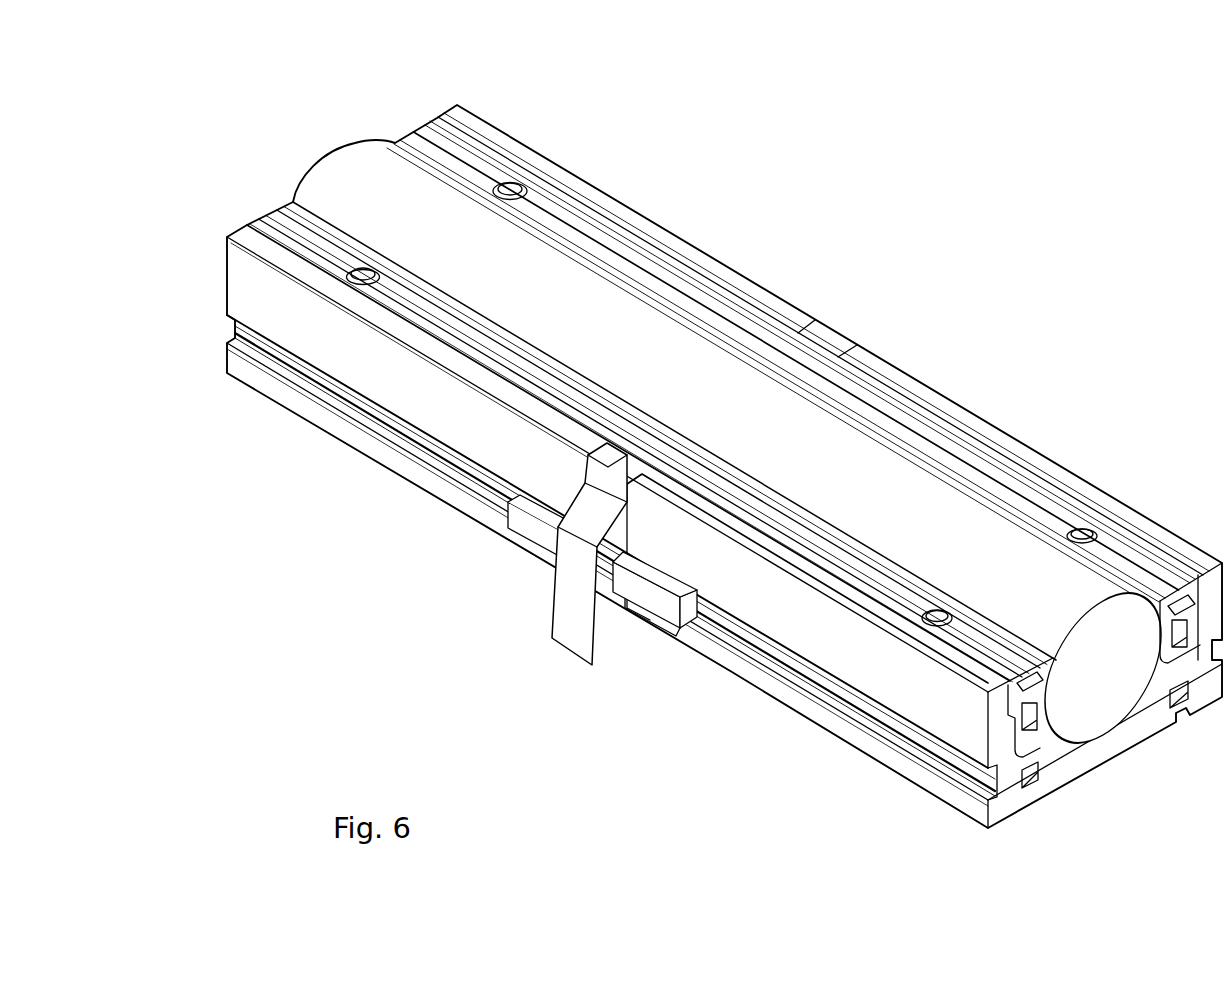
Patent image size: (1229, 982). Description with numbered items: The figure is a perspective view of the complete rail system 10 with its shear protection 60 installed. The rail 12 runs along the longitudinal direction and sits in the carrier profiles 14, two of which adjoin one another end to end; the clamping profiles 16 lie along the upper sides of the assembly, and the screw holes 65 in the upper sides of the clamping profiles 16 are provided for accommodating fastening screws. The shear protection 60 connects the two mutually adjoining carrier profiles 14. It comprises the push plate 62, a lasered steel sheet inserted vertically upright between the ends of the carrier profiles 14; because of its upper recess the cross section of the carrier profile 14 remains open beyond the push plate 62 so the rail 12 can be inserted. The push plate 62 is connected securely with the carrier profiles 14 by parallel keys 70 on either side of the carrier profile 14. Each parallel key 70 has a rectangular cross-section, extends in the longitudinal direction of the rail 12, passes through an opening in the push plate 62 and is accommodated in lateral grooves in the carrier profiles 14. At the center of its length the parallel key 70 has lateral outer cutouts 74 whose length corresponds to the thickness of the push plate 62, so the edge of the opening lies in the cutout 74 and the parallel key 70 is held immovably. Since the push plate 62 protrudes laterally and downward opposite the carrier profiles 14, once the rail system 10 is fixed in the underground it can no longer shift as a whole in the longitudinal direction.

The rail system 10 is at (928, 220).
The rail 12 is at (627, 337).
The carrier profile 14 is at (308, 408).
The clamping profile 16 is at (287, 218).
The shear protection 60 is at (687, 588).
The push plate 62 is at (572, 641).
The screw holes 65 is at (505, 185).
The parallel key 70 is at (527, 532).
The cutout 74 is at (367, 410).